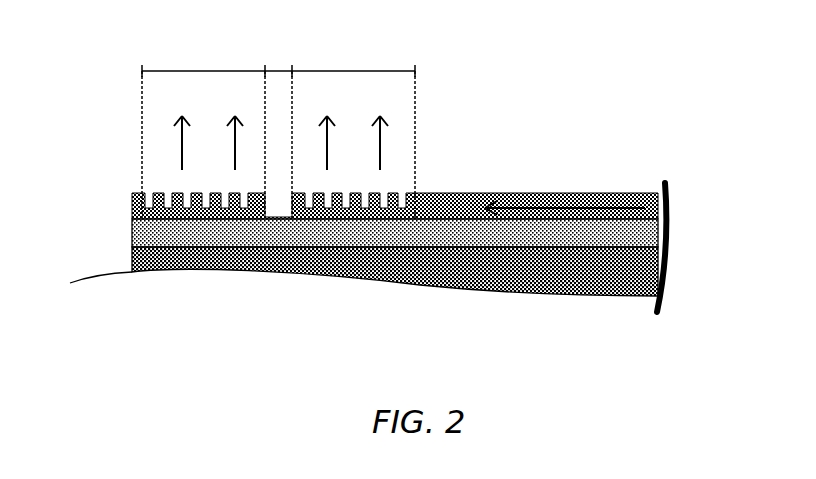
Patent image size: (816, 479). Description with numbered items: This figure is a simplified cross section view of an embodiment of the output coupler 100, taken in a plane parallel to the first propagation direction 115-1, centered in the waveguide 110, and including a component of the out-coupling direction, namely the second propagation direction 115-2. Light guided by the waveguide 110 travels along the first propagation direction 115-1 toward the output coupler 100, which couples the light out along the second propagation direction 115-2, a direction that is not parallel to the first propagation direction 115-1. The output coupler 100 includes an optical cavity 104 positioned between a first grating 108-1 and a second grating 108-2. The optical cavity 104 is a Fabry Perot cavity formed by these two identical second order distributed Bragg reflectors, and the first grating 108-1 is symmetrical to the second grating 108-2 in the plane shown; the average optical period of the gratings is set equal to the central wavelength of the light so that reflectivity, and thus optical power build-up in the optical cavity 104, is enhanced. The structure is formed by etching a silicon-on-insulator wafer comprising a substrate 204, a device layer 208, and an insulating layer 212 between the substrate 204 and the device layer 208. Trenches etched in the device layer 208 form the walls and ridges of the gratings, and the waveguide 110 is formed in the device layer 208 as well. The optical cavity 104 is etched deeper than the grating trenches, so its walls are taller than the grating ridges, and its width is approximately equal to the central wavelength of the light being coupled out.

The output coupler 100 is at (102, 123).
The optical cavity 104 is at (279, 66).
The first grating 108-1 is at (168, 68).
The second grating 108-2 is at (352, 66).
The waveguide 110 is at (480, 200).
The first propagation direction 115-1 is at (543, 205).
The second propagation direction 115-2 is at (381, 130).
The substrate 204 is at (567, 292).
The device layer 208 is at (627, 202).
The insulating layer 212 is at (645, 238).